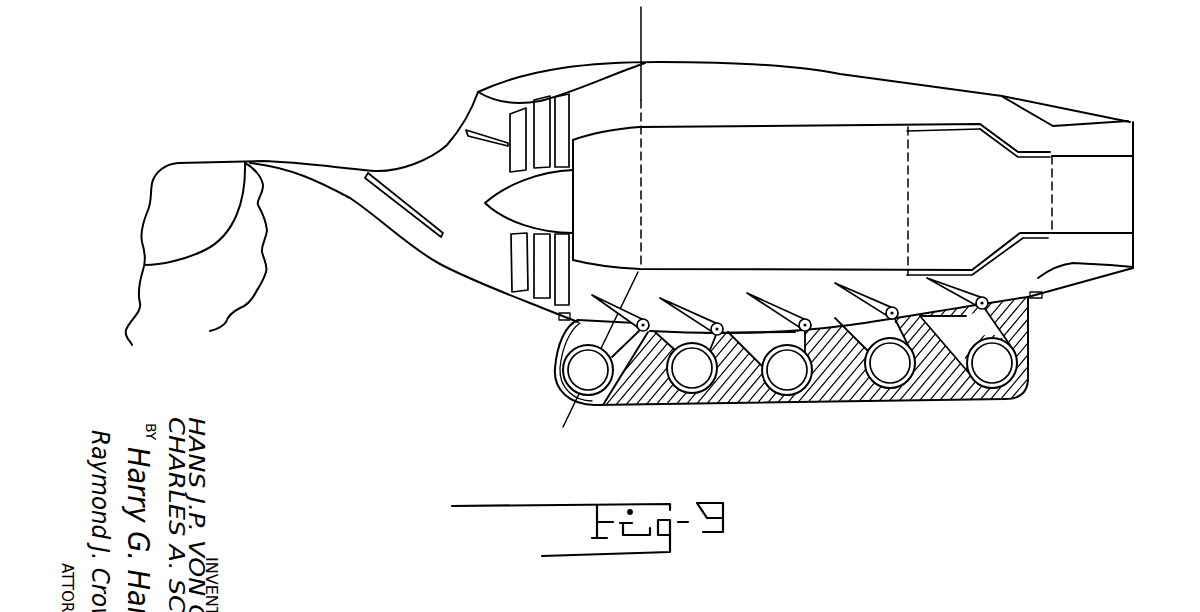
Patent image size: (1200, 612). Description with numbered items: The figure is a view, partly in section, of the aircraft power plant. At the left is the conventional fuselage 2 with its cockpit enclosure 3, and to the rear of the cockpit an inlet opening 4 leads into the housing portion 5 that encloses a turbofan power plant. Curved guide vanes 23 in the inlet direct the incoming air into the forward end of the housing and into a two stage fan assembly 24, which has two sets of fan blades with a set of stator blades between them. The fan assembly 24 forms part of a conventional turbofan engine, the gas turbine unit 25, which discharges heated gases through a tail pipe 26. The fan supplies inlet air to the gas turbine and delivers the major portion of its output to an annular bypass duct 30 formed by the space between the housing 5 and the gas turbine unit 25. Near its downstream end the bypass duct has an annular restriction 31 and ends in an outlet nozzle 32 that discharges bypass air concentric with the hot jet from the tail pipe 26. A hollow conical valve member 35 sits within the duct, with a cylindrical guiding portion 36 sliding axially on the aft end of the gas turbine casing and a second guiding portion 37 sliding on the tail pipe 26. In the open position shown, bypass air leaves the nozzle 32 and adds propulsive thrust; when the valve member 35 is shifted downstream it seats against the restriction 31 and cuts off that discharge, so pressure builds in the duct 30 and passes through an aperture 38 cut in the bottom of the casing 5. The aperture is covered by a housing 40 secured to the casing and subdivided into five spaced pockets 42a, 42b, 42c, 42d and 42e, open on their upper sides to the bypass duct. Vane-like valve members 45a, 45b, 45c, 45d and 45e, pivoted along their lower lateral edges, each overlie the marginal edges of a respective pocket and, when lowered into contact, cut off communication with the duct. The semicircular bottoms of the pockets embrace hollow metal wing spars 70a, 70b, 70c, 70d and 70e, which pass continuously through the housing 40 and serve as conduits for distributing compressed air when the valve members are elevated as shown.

The fuselage 2 is at (218, 288).
The cockpit enclosure 3 is at (203, 172).
The inlet opening 4 is at (634, 15).
The housing portion 5 is at (788, 64).
The curved guide vanes 23 is at (407, 204).
The two stage fan assembly 24 is at (503, 252).
The gas turbine unit 25 is at (760, 219).
The tail pipe 26 is at (1108, 156).
The bypass duct 30 is at (755, 104).
The annular restriction 31 is at (1058, 128).
The outlet nozzle 32 is at (1133, 256).
The hollow conical valve member 35 is at (1004, 142).
The cylindrical guiding portion 36 is at (930, 123).
The cylindrical guiding portion 37 is at (1033, 231).
The aperture 38 is at (741, 329).
The housing 40 is at (731, 405).
The pocket 42a is at (592, 333).
The pocket 42b is at (681, 352).
The pocket 42c is at (768, 352).
The pocket 42d is at (868, 345).
The pocket 42e is at (961, 337).
The vane-like valve member 45a is at (643, 310).
The vane-like valve member 45b is at (703, 314).
The vane-like valve member 45c is at (787, 310).
The vane-like valve member 45d is at (880, 289).
The vane-like valve member 45e is at (966, 291).
The hollow metal wing spar 70a is at (596, 379).
The hollow metal wing spar 70b is at (700, 377).
The hollow metal wing spar 70c is at (795, 379).
The hollow metal wing spar 70d is at (898, 372).
The hollow metal wing spar 70e is at (1000, 372).